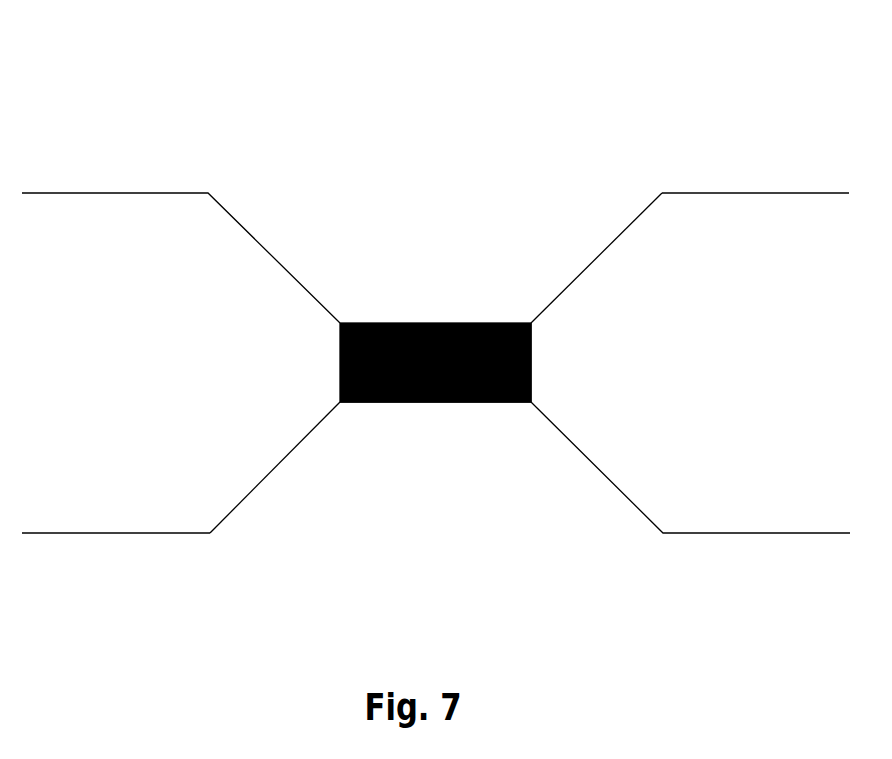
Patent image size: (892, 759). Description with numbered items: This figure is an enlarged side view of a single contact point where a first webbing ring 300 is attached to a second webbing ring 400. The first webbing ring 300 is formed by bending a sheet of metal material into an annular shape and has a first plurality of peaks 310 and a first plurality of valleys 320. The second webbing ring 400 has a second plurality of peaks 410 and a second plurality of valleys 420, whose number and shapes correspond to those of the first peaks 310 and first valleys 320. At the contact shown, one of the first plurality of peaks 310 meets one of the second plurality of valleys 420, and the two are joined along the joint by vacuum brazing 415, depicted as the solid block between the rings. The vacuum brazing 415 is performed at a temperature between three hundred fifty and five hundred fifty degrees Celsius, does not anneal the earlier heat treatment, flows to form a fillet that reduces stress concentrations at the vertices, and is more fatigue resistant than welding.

The first webbing ring 300 is at (708, 590).
The first plurality of peaks 310 is at (405, 402).
The first plurality of valleys 320 is at (117, 533).
The second webbing ring 400 is at (168, 148).
The second plurality of peaks 410 is at (755, 193).
The vacuum brazing 415 is at (531, 364).
The second plurality of valleys 420 is at (458, 323).